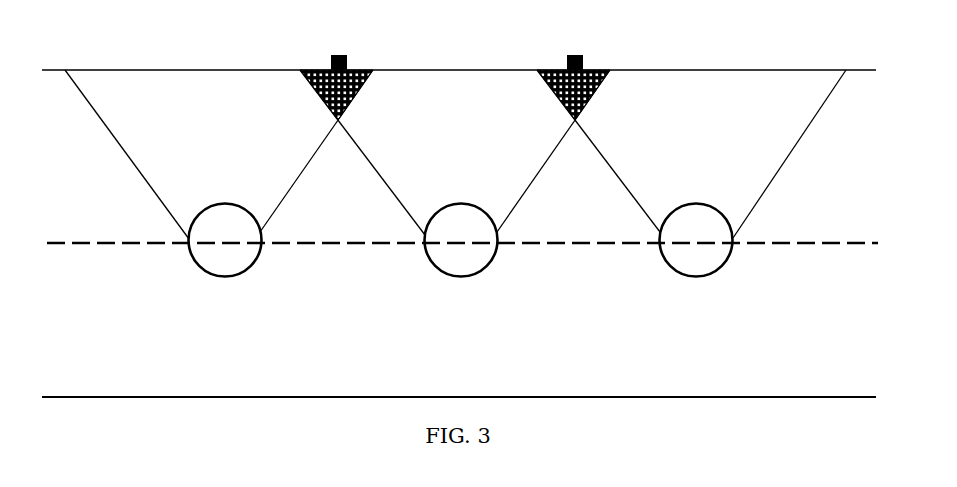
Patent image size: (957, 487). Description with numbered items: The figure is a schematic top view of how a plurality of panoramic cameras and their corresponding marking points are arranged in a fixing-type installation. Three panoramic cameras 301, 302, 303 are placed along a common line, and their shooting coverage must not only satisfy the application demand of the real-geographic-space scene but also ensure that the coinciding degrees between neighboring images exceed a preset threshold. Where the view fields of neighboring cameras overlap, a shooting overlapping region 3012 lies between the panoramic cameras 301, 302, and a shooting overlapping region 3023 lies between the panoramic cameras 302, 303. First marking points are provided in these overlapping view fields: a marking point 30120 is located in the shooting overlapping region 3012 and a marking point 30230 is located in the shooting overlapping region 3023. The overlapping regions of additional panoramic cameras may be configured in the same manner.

The panoramic camera 301 is at (225, 256).
The panoramic camera 302 is at (461, 256).
The panoramic camera 303 is at (696, 256).
The marking point 30120 is at (339, 46).
The shooting overlapping region 3012 is at (342, 152).
The marking point 30230 is at (575, 46).
The shooting overlapping region 3023 is at (578, 151).